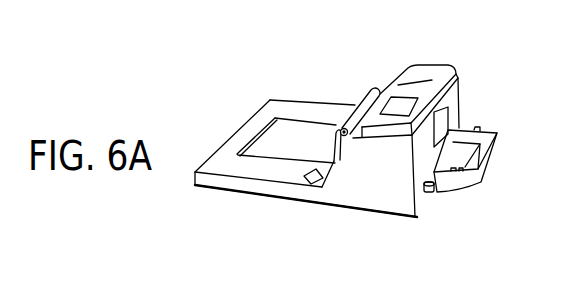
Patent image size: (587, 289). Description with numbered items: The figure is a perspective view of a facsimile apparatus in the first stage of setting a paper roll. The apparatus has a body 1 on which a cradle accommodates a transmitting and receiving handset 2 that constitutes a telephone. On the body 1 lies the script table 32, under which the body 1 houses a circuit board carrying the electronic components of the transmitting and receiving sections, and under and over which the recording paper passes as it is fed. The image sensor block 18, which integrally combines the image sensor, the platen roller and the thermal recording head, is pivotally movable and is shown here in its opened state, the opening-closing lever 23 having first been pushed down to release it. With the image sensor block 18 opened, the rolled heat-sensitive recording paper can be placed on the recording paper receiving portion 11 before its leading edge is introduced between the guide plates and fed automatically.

The body 1 is at (365, 198).
The transmitting and receiving handset 2 is at (430, 72).
The image sensor block 18 is at (360, 103).
The script table 32 is at (277, 148).
The recording paper receiving portion 11 is at (497, 152).
The opening-closing lever 23 is at (435, 190).